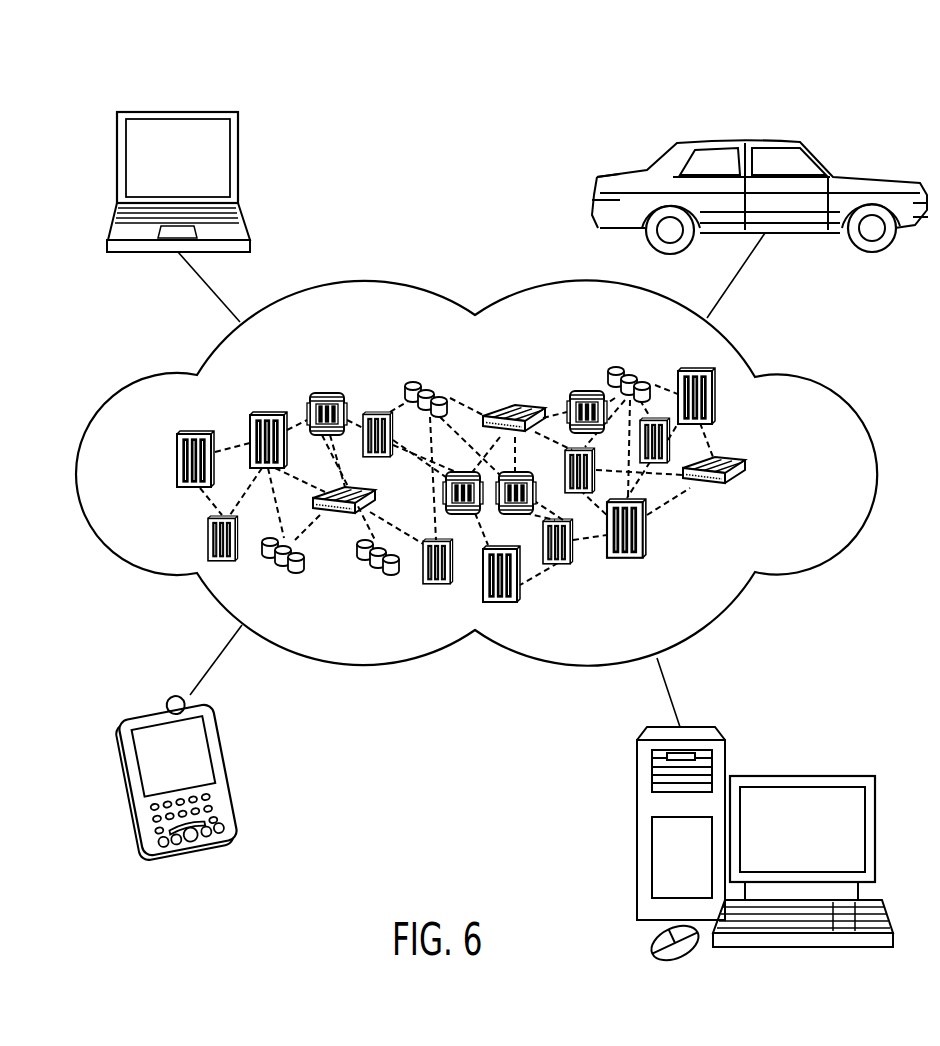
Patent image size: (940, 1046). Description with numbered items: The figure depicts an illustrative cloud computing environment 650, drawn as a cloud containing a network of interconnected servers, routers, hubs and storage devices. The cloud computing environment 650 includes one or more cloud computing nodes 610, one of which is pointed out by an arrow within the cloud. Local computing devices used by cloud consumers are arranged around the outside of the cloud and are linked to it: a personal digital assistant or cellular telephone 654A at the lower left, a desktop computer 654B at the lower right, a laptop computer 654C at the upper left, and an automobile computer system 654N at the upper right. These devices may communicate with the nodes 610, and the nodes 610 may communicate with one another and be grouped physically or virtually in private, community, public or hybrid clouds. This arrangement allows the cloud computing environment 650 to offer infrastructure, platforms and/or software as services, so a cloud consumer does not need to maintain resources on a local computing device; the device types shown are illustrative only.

The cloud computing environment 650 is at (815, 380).
The cloud computing node 610 is at (752, 472).
The personal digital assistant (PDA) or cellular telephone 654A is at (158, 712).
The desktop computer 654B is at (802, 775).
The laptop computer 654C is at (175, 110).
The automobile computer system 654N is at (738, 140).